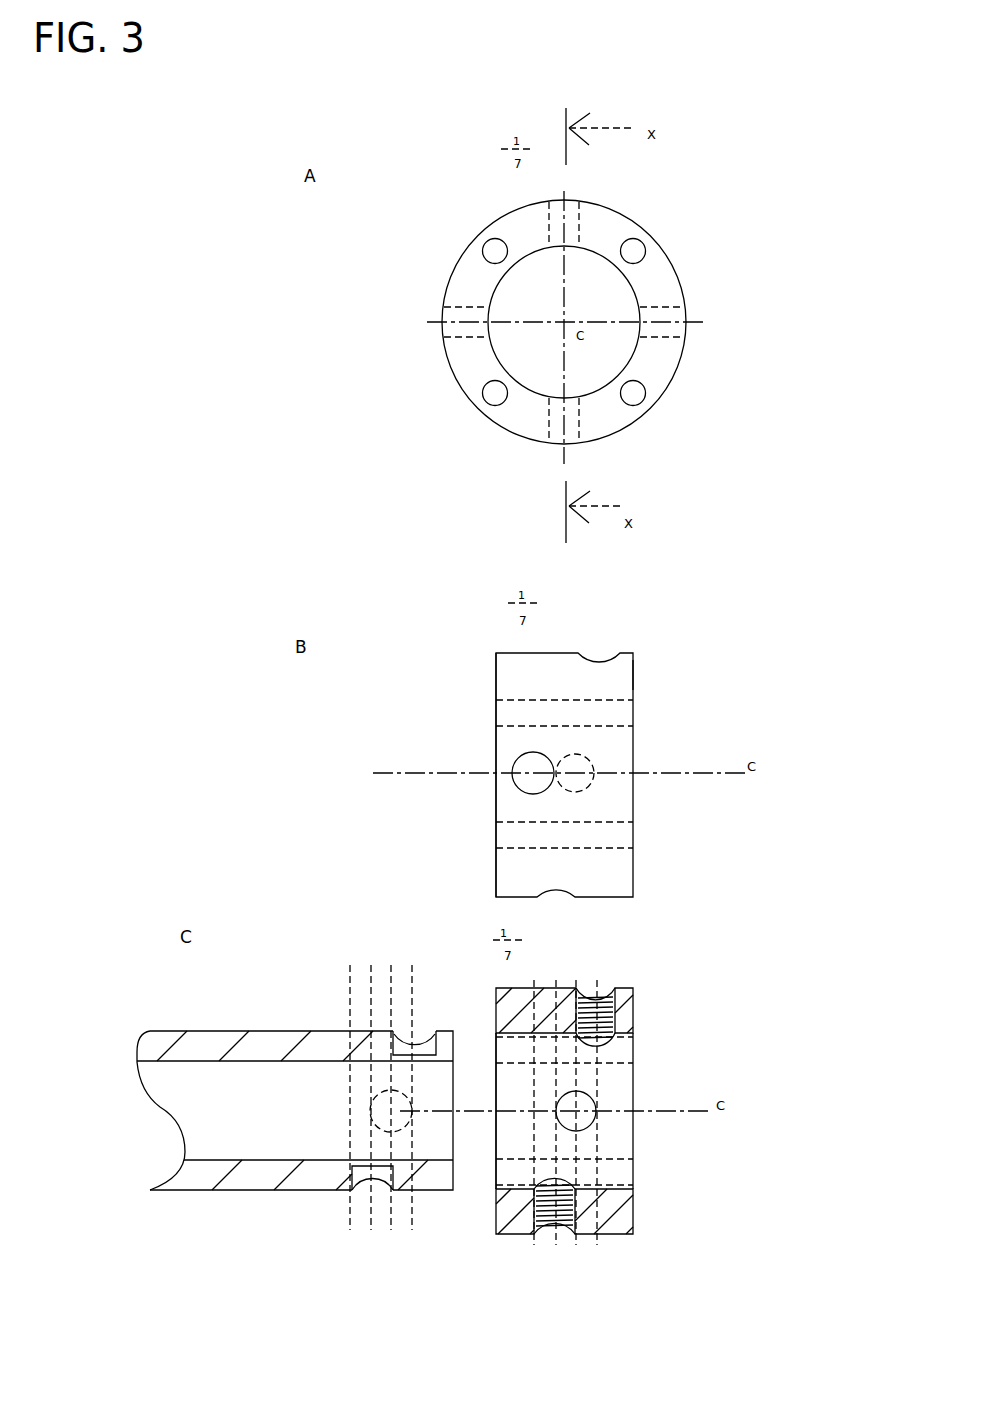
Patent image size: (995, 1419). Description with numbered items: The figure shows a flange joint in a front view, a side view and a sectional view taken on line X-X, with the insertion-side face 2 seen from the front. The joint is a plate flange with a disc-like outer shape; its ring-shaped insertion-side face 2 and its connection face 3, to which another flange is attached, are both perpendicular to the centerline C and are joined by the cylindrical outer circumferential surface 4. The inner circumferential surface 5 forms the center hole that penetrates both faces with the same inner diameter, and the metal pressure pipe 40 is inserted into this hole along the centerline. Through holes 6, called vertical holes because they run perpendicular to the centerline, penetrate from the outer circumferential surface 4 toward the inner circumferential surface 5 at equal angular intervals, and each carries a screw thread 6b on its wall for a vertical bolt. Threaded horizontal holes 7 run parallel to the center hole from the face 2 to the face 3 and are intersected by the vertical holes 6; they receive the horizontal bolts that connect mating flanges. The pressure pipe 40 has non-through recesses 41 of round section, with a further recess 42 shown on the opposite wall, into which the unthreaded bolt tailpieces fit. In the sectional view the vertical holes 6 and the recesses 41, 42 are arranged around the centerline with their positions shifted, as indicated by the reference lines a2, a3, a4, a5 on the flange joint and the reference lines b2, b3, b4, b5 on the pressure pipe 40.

The face 2 is at (477, 292).
The face 3 is at (645, 675).
The outer circumferential surface 4 is at (674, 381).
The inner circumferential surface 5 is at (632, 310).
The vertical hole 6 is at (600, 661).
The screw thread 6b is at (633, 1005).
The horizontal hole 7 is at (494, 393).
The pressure pipe 40 is at (212, 1036).
The recess 41 is at (427, 1034).
The lower groove 42 is at (446, 1175).
The reference line a2 is at (598, 1126).
The reference line a3 is at (576, 1121).
The reference line a4 is at (556, 1127).
The reference line a5 is at (532, 1123).
The reference line b2 is at (414, 1113).
The reference line b3 is at (391, 1105).
The reference line b4 is at (369, 1113).
The reference line b5 is at (344, 1105).